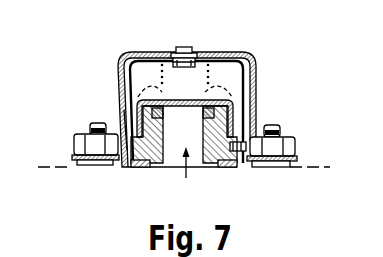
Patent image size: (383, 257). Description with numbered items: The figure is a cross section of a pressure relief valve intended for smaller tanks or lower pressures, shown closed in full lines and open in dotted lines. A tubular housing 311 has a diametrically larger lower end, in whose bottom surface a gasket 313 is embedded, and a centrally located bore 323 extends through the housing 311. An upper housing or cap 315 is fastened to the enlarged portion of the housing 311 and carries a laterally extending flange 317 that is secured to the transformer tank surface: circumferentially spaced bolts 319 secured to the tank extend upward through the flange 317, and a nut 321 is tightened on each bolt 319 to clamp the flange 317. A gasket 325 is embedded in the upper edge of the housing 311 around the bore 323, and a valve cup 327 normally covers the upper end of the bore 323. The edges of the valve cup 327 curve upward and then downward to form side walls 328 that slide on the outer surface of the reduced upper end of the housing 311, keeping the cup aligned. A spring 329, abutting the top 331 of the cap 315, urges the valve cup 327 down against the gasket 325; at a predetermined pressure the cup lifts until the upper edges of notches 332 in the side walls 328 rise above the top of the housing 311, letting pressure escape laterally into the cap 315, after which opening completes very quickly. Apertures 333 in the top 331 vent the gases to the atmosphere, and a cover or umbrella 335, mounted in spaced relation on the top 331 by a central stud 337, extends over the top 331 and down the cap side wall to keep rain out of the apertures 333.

The tubular housing 311 is at (158, 168).
The gasket 313 is at (140, 168).
The upper housing or cap 315 is at (124, 110).
The laterally extending flange 317 is at (72, 157).
The bolts 319 is at (90, 127).
The nut 321 is at (294, 148).
The bore 323 is at (205, 158).
The gasket 325 is at (163, 112).
The valve cup 327 is at (190, 107).
The side walls 328 is at (240, 127).
The spring 329 is at (206, 97).
The top 331 is at (166, 50).
The notches 332 is at (233, 132).
The apertures 333 is at (137, 50).
The cover or umbrella 335 is at (118, 78).
The stud 337 is at (185, 48).